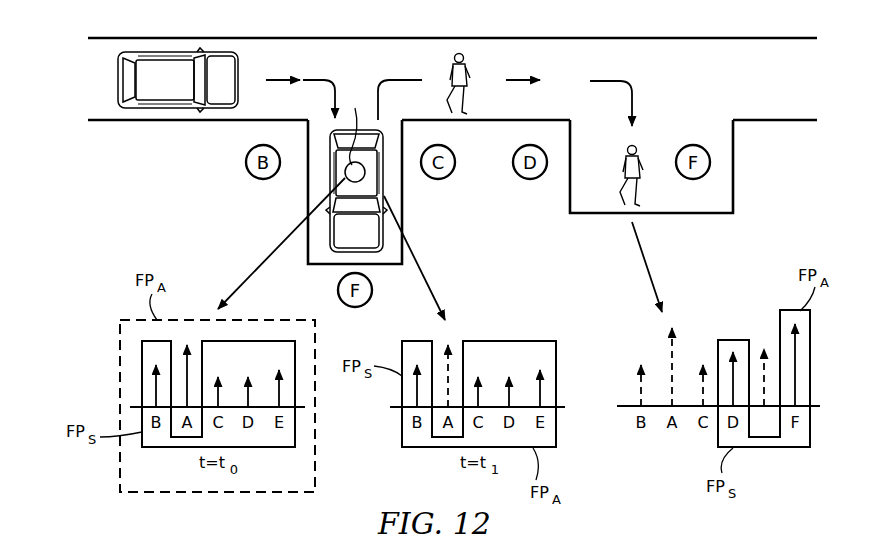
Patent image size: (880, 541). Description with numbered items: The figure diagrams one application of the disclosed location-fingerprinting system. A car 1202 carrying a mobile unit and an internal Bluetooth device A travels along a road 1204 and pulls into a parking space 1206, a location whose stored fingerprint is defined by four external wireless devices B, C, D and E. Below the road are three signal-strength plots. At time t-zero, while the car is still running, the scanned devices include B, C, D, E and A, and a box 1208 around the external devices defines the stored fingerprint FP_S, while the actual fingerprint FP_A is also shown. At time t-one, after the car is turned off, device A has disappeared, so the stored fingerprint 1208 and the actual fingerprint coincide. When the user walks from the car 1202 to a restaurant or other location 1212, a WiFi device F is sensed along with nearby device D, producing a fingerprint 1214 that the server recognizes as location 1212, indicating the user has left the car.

The car 1202 is at (118, 78).
The road 1204 is at (98, 61).
The parking space 1206 is at (395, 197).
The box 1208 is at (142, 360).
The location 1212 is at (735, 147).
The fingerprint 1214 is at (793, 447).